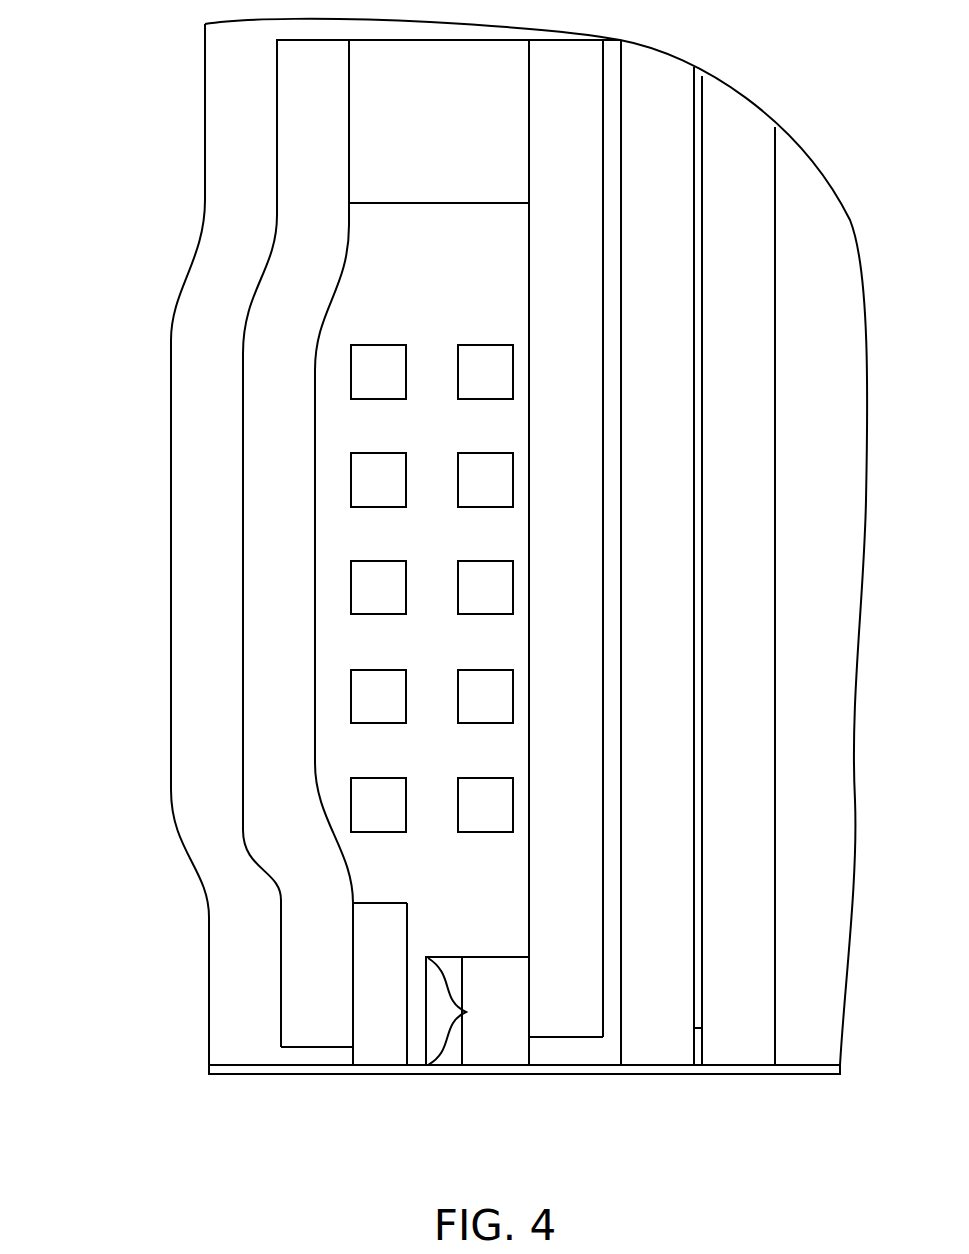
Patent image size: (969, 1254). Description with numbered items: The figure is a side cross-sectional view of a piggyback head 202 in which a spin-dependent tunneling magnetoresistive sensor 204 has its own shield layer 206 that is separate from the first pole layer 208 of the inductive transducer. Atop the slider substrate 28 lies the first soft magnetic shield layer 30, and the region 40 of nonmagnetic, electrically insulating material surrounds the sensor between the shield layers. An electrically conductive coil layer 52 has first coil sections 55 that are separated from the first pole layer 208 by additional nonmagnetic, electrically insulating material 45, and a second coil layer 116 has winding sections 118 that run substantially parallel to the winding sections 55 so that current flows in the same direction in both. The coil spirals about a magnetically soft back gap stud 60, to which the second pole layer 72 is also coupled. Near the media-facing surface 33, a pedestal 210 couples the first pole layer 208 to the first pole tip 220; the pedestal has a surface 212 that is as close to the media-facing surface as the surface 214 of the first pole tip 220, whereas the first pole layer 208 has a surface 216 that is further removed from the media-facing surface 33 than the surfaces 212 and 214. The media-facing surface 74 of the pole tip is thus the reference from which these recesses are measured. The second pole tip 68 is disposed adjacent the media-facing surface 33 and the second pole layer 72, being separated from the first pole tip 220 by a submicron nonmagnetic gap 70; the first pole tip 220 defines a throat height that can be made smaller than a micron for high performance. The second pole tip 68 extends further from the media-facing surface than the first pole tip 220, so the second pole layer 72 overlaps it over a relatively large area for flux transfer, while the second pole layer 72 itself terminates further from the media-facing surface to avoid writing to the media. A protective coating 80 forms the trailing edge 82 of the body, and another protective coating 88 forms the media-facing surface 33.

The slider substrate 28 is at (806, 569).
The first soft magnetic shield layer 30 is at (721, 679).
The media-facing surface 33 is at (263, 1075).
The region of nonmagnetic, electrically insulating material 40 is at (702, 328).
The nonmagnetic, electrically insulating material 45 is at (415, 659).
The coil layer 52 is at (484, 308).
The first coil sections 55 is at (513, 372).
The back gap stud 60 is at (421, 124).
The second pole tip 68 is at (383, 903).
The nonmagnetic gap 70 is at (405, 1047).
The second pole layer 72 is at (261, 659).
The media-facing surface of the pole tip 74 is at (317, 1048).
The protective coating 80 is at (189, 594).
The trailing edge 82 is at (170, 490).
The protective coating 88 is at (810, 1065).
The second coil layer 116 is at (377, 308).
The winding sections 118 is at (350, 372).
The piggyback head 202 is at (135, 652).
The spin-dependent tunneling MR sensor 204 is at (705, 1045).
The shield layer 206 is at (632, 679).
The first pole layer 208 is at (543, 774).
The pedestal 210 is at (497, 968).
The surface of pedestal 212 is at (498, 1075).
The surface of first pole tip 214 is at (443, 1075).
The surface of first pole layer 216 is at (570, 1038).
The first pole tip 220 is at (445, 957).